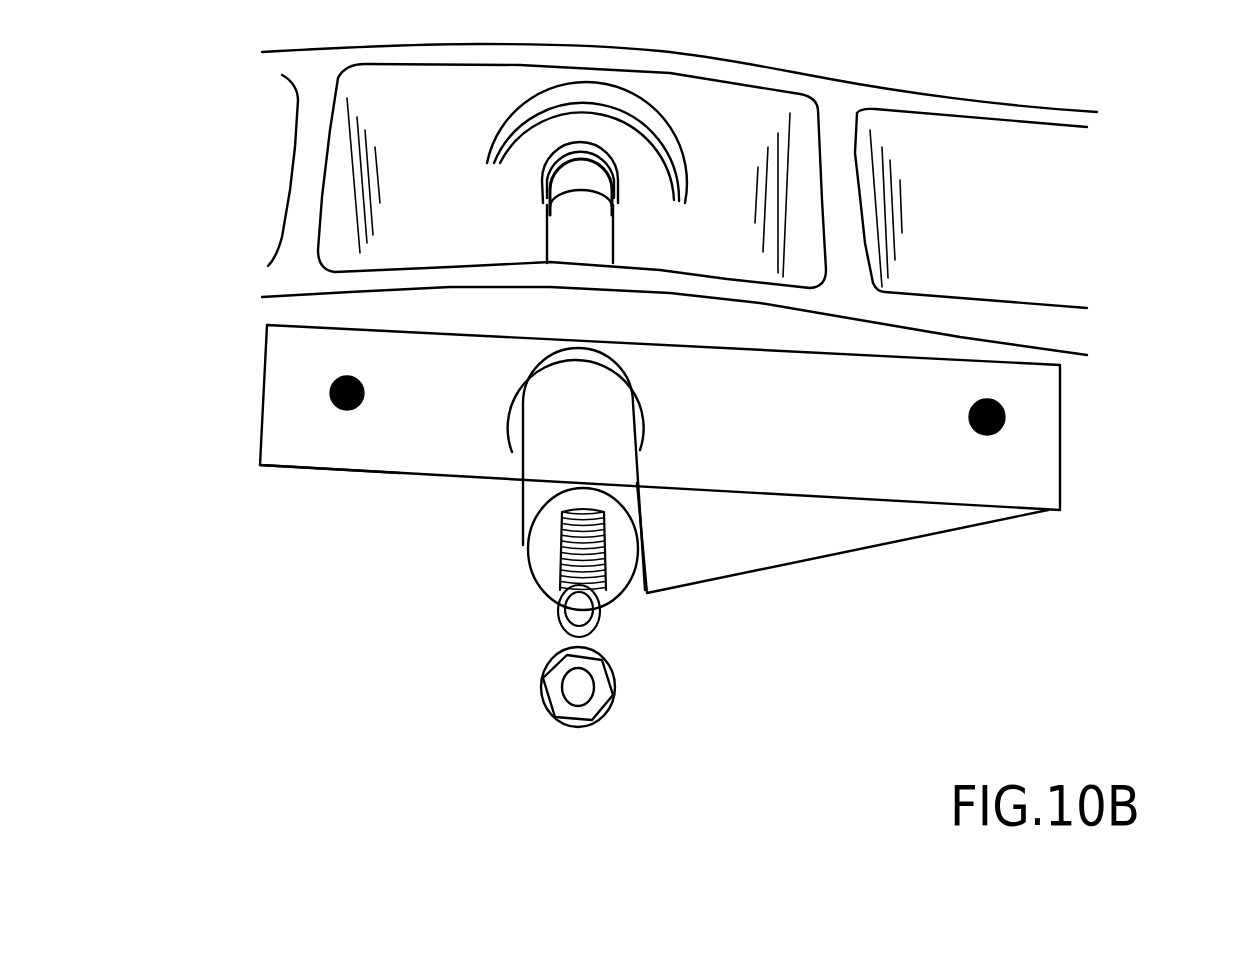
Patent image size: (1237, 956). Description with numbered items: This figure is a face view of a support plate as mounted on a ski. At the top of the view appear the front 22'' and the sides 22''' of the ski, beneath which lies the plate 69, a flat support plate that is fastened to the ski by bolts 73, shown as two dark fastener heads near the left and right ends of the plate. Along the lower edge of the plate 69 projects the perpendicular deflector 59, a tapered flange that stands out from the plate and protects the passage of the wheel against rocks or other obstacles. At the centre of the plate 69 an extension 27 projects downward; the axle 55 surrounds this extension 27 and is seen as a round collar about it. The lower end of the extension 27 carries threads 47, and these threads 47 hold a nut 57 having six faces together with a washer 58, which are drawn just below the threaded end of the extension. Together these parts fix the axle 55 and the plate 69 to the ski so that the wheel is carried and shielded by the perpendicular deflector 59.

The front of the ski 22'' is at (736, 199).
The sides of the ski 22''' is at (660, 454).
The bolts 73 is at (337, 382).
The plate 69 is at (352, 450).
The perpendicular deflector 59 is at (822, 517).
The axle 55 is at (540, 547).
The extension 27 is at (587, 540).
The threads 47 is at (574, 572).
The washer 58 is at (610, 668).
The nut 57 is at (555, 692).